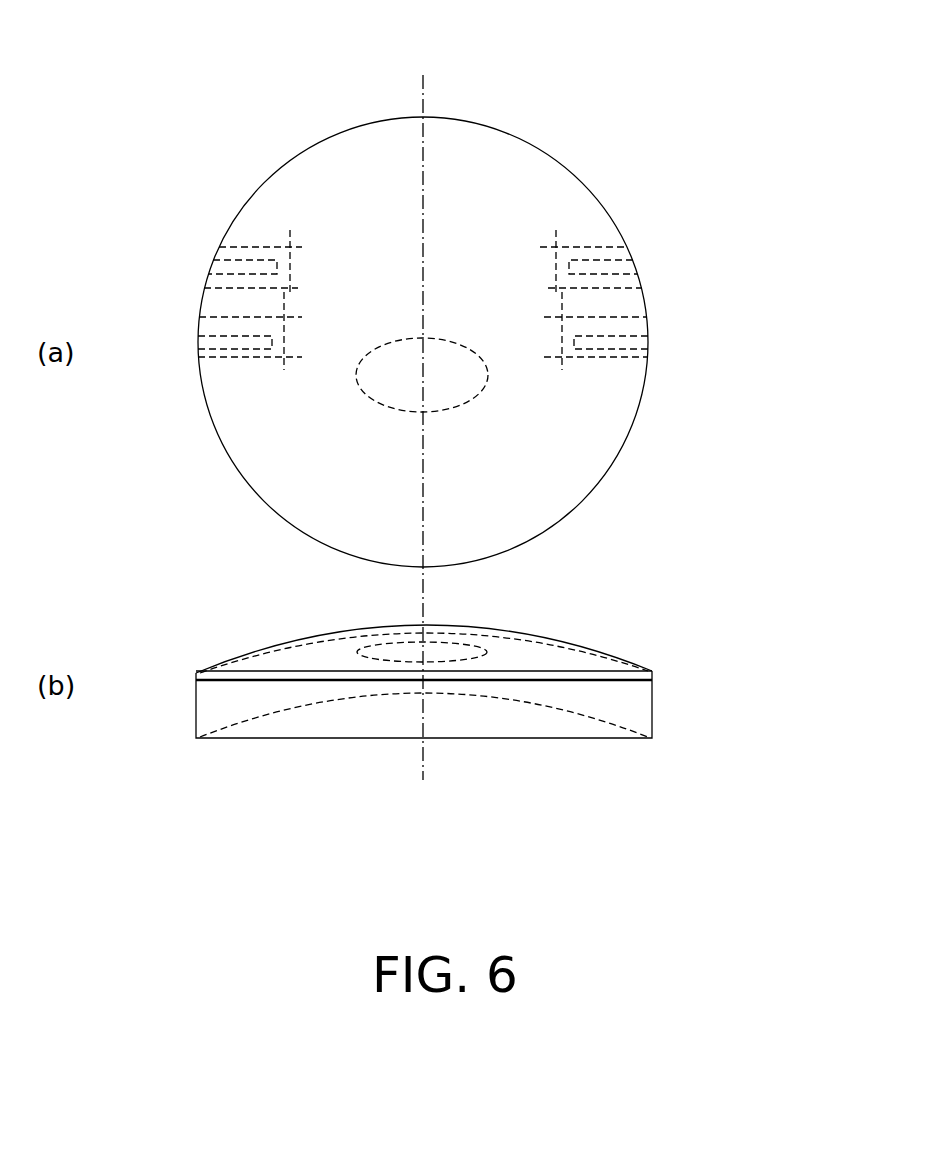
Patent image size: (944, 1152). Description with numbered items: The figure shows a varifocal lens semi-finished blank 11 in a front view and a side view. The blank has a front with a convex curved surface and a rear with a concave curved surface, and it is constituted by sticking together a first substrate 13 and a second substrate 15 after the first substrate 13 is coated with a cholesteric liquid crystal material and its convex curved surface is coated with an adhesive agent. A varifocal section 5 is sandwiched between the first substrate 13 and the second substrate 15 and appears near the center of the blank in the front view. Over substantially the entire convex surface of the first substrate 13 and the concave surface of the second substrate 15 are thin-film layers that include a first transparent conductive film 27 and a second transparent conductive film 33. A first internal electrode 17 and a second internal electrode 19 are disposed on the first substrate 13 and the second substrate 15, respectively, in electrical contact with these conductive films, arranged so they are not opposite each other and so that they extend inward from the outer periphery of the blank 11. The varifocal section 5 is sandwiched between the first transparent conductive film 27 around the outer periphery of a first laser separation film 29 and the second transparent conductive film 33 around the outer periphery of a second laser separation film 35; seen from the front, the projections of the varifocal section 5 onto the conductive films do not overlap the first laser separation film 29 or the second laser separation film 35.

The varifocal lens semi-finished blank 11 is at (565, 108).
The varifocal section 5 is at (357, 385).
The first substrate 13 is at (197, 703).
The second substrate 15 is at (196, 675).
The first internal electrode 17 is at (648, 357).
The second internal electrode 19 is at (623, 268).
The first transparent conductive film 27 is at (550, 198).
The first laser separation film 29 is at (600, 255).
The second transparent conductive film 33 is at (483, 248).
The second laser separation film 35 is at (628, 325).